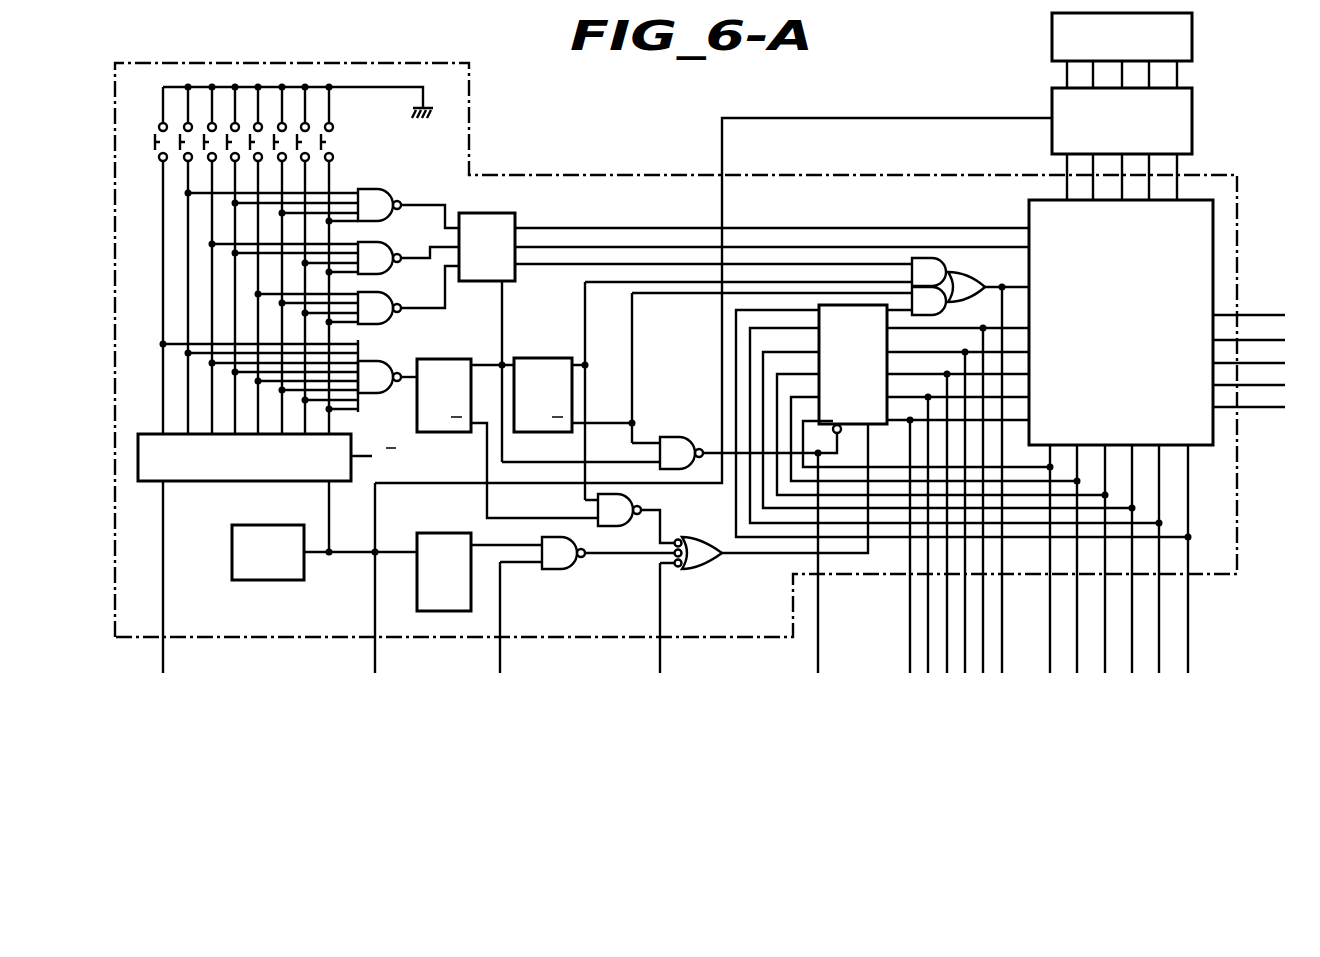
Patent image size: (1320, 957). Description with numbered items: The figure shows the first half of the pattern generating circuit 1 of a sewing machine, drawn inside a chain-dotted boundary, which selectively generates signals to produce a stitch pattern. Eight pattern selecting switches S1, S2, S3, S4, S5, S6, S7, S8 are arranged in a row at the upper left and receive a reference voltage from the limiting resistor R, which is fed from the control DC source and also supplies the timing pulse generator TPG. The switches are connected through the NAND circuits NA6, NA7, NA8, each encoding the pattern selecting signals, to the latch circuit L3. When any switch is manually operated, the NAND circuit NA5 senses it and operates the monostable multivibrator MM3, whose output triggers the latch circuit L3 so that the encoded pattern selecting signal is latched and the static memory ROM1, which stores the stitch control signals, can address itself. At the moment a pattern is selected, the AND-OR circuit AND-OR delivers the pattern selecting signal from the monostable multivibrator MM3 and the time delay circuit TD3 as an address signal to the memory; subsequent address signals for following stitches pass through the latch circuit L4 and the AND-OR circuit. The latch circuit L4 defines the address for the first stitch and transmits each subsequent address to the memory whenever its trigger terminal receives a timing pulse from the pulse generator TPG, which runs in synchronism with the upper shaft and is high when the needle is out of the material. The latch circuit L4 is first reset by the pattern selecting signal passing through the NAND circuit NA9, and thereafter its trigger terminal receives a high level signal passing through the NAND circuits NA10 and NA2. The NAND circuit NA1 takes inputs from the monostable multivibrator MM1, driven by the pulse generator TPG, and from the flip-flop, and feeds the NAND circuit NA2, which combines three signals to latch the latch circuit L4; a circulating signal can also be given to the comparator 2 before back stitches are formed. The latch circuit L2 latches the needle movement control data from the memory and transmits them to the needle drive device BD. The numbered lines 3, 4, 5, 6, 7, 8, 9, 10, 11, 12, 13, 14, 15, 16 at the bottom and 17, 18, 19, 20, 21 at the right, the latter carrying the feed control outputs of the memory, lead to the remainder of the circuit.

The pattern generating circuit 1 is at (469, 110).
The comparator 2 is at (383, 593).
The terminal 3 is at (508, 632).
The terminal 4 is at (667, 633).
The terminal 5 is at (907, 560).
The terminal 6 is at (927, 549).
The terminal 7 is at (947, 537).
The terminal 8 is at (965, 526).
The terminal 9 is at (983, 514).
The terminal 10 is at (1003, 494).
The terminal 11 is at (1046, 574).
The terminal 12 is at (1076, 574).
The terminal 13 is at (1103, 574).
The terminal 14 is at (1131, 574).
The terminal 15 is at (1157, 574).
The terminal 16 is at (1187, 574).
The terminal 17 is at (1262, 407).
The terminal 18 is at (1262, 385).
The terminal 19 is at (1262, 363).
The terminal 20 is at (1262, 340).
The terminal 21 is at (1262, 315).
The pattern selecting switch S1 is at (146, 260).
The pattern selecting switch S2 is at (180, 133).
The pattern selecting switch S3 is at (204, 133).
The pattern selecting switch S4 is at (227, 133).
The pattern selecting switch S5 is at (250, 133).
The pattern selecting switch S6 is at (274, 133).
The pattern selecting switch S7 is at (297, 133).
The pattern selecting switch S8 is at (338, 260).
The NAND circuit NA1 is at (587, 564).
The NAND circuit NA2 is at (764, 496).
The NAND circuit NA5 is at (289, 376).
The NAND circuit NA6 is at (357, 296).
The NAND circuit NA7 is at (334, 249).
The NAND circuit NA8 is at (322, 199).
The NAND circuit NA9 is at (671, 544).
The NAND circuit NA10 is at (640, 513).
The latch circuit L2 is at (1123, 107).
The latch circuit L3 is at (744, 337).
The latch circuit L4 is at (964, 423).
The monostable multivibrator MM1 is at (479, 561).
The monostable multivibrator MM3 is at (507, 428).
The time delay circuit TD3 is at (713, 391).
The limiting resistor R is at (268, 493).
The timing pulse generator TPG is at (324, 552).
The needle drive device BD is at (1122, 37).
The static memory ROM1 is at (1121, 299).
The AND-OR circuit AND-OR is at (970, 283).